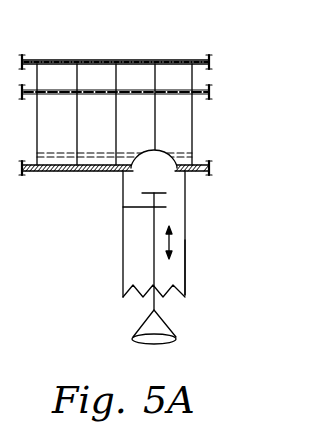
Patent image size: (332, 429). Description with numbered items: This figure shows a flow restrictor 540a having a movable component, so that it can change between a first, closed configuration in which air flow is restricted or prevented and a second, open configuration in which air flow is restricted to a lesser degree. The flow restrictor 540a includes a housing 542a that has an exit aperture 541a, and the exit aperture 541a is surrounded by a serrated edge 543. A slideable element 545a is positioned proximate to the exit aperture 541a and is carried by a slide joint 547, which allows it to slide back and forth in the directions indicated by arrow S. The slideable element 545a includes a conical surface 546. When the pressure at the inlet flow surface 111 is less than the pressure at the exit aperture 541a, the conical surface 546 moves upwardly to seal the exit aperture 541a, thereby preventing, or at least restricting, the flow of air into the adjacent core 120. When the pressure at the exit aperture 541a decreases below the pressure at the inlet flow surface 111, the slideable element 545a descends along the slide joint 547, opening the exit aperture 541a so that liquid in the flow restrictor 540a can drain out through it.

The inlet flow surface 111 is at (170, 60).
The core 120 is at (208, 110).
The flow restrictor 540a is at (206, 213).
The housing 542a is at (123, 220).
The serrated edge 543 is at (185, 295).
The slide joint 547 is at (153, 207).
The exit aperture 541a is at (132, 300).
The conical surface 546 is at (158, 322).
The slideable element 545a is at (172, 335).
The arrow indicating sliding direction S is at (172, 241).